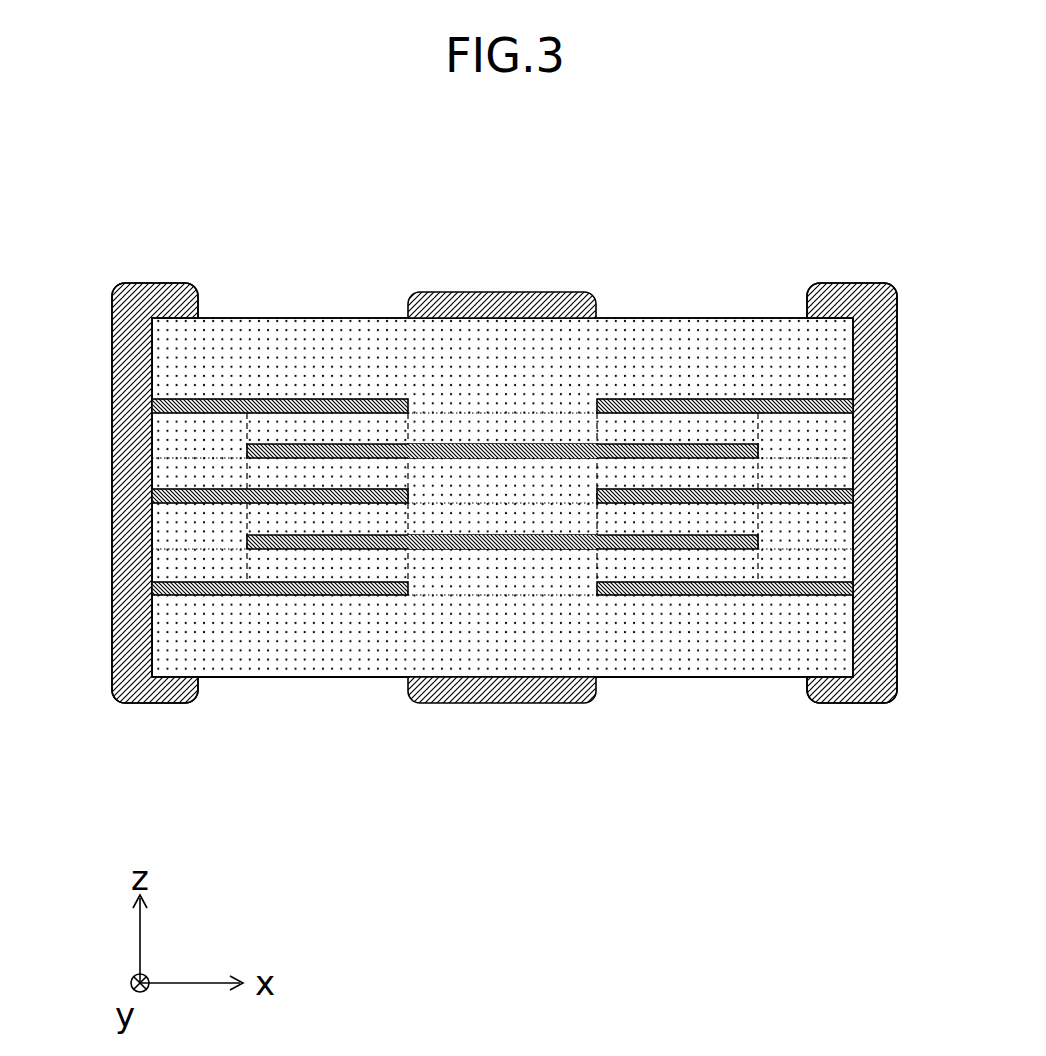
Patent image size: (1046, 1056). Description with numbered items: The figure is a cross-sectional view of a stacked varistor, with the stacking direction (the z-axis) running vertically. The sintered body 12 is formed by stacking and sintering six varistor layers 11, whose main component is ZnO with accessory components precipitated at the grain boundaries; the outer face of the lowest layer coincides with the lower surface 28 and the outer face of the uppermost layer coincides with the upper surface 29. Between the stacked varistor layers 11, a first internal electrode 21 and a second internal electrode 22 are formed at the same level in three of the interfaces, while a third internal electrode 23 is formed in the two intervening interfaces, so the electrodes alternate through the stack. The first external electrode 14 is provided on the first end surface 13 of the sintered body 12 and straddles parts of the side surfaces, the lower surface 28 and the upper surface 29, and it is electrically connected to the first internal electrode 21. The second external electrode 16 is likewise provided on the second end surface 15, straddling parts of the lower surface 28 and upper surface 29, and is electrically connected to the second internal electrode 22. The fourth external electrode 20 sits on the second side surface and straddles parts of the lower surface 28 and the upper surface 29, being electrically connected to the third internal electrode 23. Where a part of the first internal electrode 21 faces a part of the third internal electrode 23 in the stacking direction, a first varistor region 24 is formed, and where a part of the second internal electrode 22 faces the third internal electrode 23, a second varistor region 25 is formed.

The varistor layer 11 is at (192, 435).
The sintered body 12 is at (472, 565).
The first end surface 13 is at (153, 650).
The first external electrode 14 is at (132, 688).
The second end surface 15 is at (855, 620).
The second external electrode 16 is at (870, 685).
The fourth external electrode 20 is at (548, 293).
The first internal electrode 21 is at (245, 397).
The second internal electrode 22 is at (760, 398).
The third internal electrode 23 is at (452, 445).
The first varistor region 24 is at (335, 428).
The second varistor region 25 is at (665, 428).
The lower surface 28 is at (628, 678).
The upper surface 29 is at (263, 317).